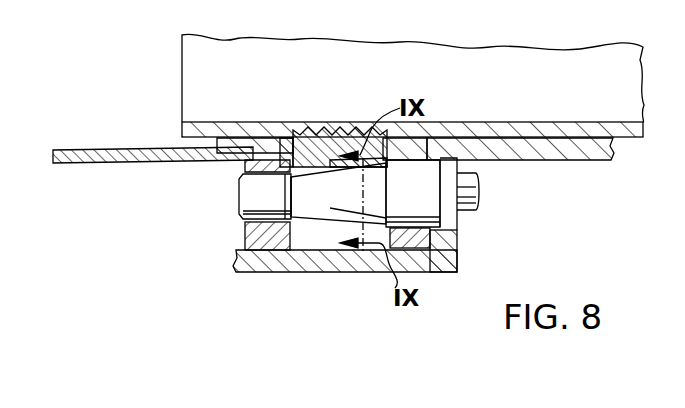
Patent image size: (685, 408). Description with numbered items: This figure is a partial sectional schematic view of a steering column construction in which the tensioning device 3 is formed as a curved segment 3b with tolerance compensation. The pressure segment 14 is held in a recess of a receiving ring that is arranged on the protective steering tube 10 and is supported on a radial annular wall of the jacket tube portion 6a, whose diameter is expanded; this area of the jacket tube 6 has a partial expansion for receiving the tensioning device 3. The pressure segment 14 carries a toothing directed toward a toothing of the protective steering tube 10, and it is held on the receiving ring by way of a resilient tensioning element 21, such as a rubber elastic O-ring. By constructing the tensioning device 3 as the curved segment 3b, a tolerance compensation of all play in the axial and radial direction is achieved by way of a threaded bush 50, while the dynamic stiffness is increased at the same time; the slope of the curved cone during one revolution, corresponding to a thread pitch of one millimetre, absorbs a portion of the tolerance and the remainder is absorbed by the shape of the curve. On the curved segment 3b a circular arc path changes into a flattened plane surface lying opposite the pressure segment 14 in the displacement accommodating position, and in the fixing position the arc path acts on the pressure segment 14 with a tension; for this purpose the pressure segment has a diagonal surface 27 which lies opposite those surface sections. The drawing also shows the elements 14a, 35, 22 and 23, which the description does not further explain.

The pressure segment 14 is at (347, 112).
The mounting surface of body 14a is at (296, 146).
The resilient tensioning element 21 is at (330, 166).
The diagonal surface 27 is at (352, 157).
The protective steering tube 10 is at (573, 122).
The threaded bush 50 is at (247, 164).
The bolt head 35 is at (257, 190).
The jacket tube 6 is at (597, 152).
The spacer block 22 is at (263, 243).
The jacket tube portion 6a is at (278, 260).
The tensioning device 3 is at (318, 244).
The curved segment 3b is at (347, 207).
The nut 23 is at (457, 262).